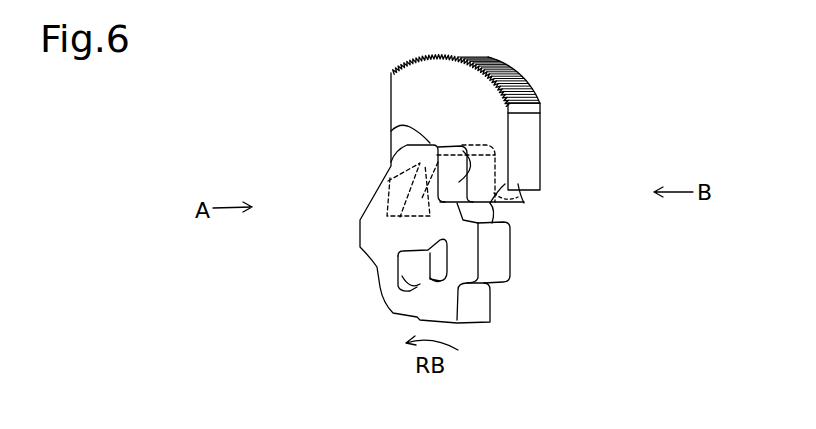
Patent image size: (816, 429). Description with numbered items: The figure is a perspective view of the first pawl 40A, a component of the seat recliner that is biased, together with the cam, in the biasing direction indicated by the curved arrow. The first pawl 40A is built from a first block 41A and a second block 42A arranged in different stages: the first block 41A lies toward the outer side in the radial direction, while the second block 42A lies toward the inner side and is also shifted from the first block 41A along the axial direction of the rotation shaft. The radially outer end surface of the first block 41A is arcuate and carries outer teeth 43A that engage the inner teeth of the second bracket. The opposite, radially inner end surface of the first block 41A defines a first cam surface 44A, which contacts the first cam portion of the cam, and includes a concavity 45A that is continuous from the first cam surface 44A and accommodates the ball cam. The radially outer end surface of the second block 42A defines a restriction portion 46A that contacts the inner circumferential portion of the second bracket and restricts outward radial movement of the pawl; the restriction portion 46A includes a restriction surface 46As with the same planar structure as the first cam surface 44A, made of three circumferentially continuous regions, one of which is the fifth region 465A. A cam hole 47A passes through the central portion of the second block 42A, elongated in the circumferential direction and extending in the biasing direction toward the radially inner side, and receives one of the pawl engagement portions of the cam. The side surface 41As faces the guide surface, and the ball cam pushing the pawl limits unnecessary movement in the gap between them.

The first pawl 40A is at (664, 111).
The first block 41A is at (542, 158).
The side surface 41As is at (530, 132).
The second block 42A is at (503, 268).
The outer teeth 43A is at (500, 67).
The first cam surface 44A is at (388, 196).
The concavity 45A is at (518, 197).
The restriction portion 46A is at (391, 158).
The restriction surface 46As is at (462, 151).
The fifth region 465A is at (391, 131).
The cam hole 47A is at (412, 290).